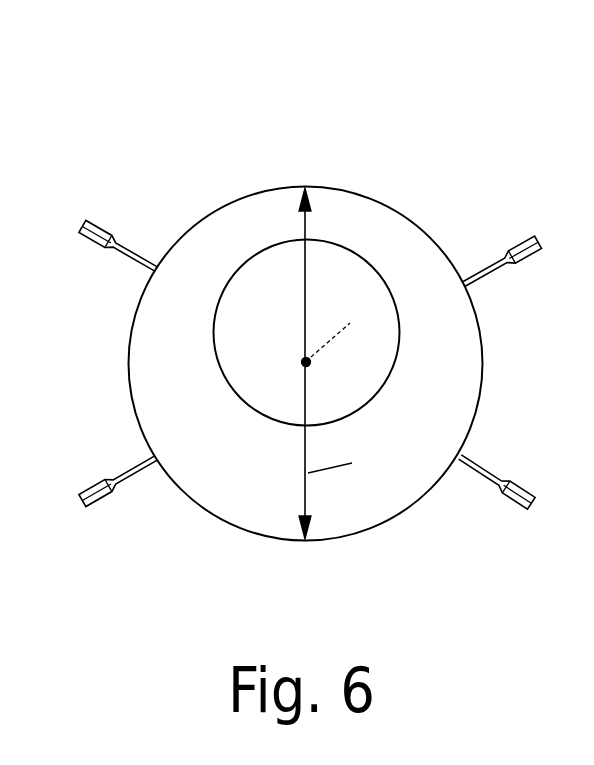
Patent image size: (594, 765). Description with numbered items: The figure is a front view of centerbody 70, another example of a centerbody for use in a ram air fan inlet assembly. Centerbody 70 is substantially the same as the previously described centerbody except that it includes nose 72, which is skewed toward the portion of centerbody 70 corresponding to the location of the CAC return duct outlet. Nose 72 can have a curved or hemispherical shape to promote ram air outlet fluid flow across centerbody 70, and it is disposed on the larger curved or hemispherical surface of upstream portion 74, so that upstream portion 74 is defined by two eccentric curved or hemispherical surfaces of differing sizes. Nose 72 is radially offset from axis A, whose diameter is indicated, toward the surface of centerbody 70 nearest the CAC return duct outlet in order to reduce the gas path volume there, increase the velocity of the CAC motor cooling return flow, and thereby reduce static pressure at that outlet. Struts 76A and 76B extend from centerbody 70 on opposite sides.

The centerbody 70 is at (183, 162).
The nose 72 is at (258, 345).
The upstream portion 74 is at (251, 476).
The struts 76A is at (125, 263).
The struts 76B is at (483, 472).